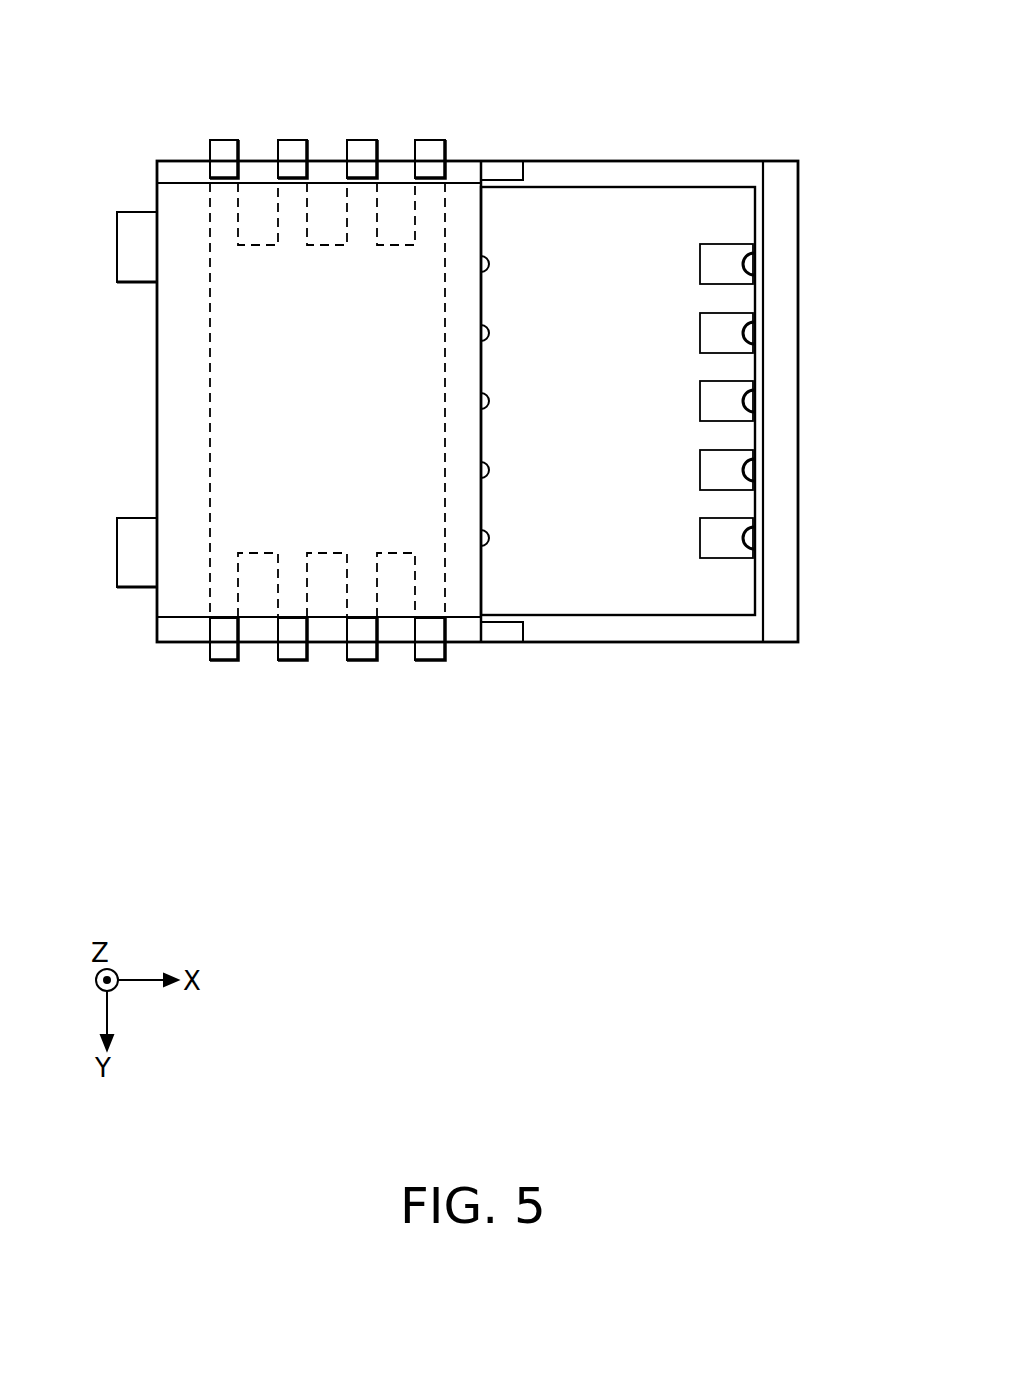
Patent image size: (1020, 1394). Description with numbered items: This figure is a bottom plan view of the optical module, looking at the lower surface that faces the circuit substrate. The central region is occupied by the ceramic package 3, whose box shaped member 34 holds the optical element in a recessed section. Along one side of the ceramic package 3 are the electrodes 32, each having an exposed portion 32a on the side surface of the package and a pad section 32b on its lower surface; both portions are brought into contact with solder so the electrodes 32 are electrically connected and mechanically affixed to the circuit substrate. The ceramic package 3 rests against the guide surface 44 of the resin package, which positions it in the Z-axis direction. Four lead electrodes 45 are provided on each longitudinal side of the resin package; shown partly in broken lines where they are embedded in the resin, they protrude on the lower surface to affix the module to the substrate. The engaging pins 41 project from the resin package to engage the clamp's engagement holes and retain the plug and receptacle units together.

The ceramic package 3 is at (618, 477).
The box shaped member 34 is at (645, 580).
The electrodes 32 is at (816, 365).
The exposed portions 32a is at (760, 262).
The pad sections 32b is at (722, 252).
The engaging pins 41 is at (132, 232).
The guide surface 44 is at (592, 162).
The lead electrodes 45 is at (293, 152).